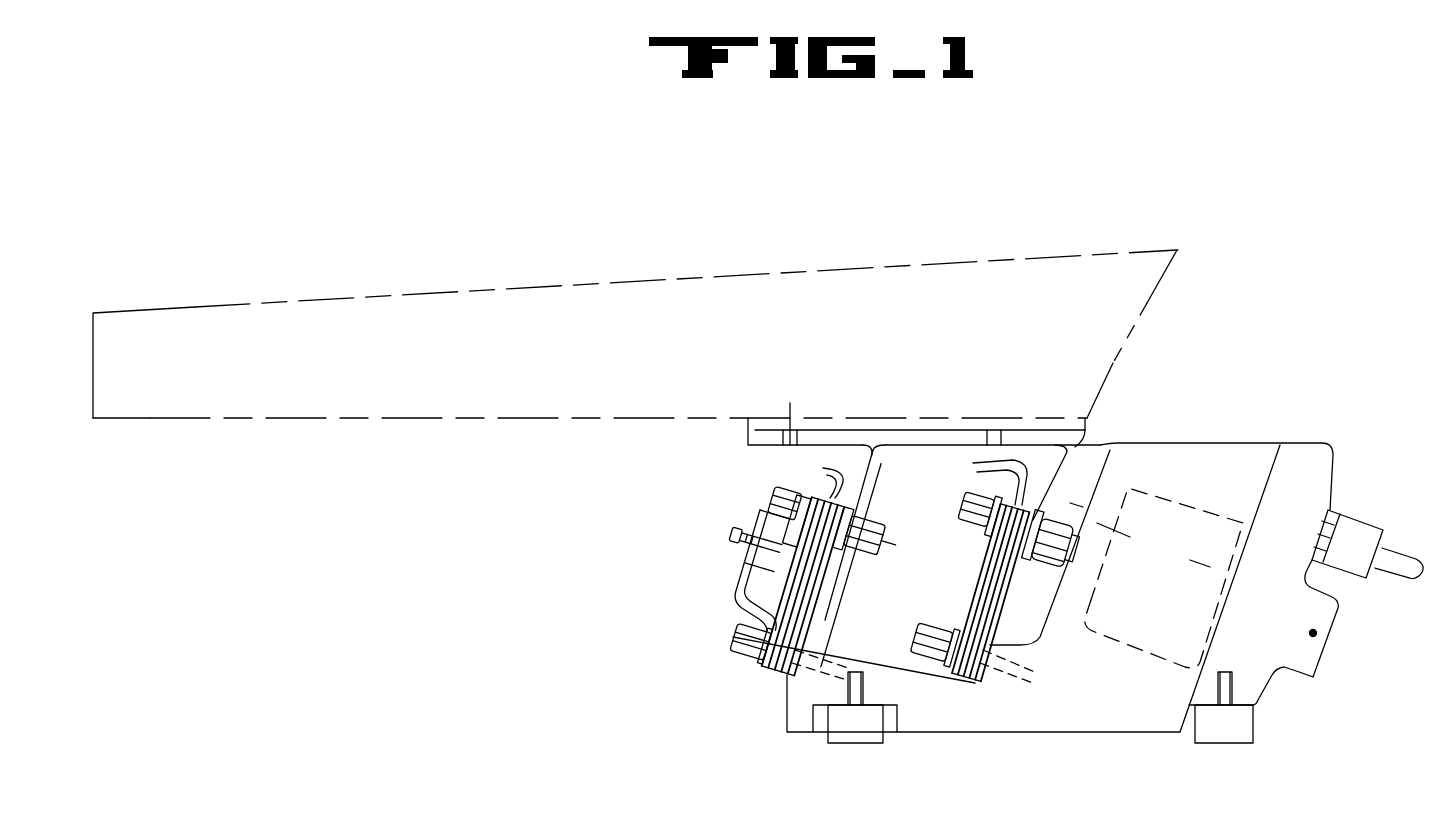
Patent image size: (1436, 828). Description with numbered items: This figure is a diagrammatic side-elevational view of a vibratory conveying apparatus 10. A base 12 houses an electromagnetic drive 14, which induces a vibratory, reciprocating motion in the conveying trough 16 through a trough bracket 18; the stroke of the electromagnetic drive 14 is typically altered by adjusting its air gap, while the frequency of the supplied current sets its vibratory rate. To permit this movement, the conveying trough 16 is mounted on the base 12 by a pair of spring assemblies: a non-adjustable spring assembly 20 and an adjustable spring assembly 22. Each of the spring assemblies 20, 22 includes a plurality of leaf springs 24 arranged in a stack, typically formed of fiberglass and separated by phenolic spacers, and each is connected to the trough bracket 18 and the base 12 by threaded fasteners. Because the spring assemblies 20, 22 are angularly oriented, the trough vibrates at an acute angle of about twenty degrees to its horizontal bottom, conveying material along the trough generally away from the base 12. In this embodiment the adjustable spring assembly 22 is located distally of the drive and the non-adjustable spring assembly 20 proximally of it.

The vibratory conveying apparatus 10 is at (1272, 250).
The base 12 is at (1230, 443).
The electromagnetic drive 14 is at (1137, 645).
The conveying trough 16 is at (862, 262).
The trough bracket 18 is at (1083, 447).
The non-adjustable spring assembly 20 is at (970, 580).
The adjustable spring assembly 22 is at (727, 598).
The leaf springs 24 is at (904, 481).